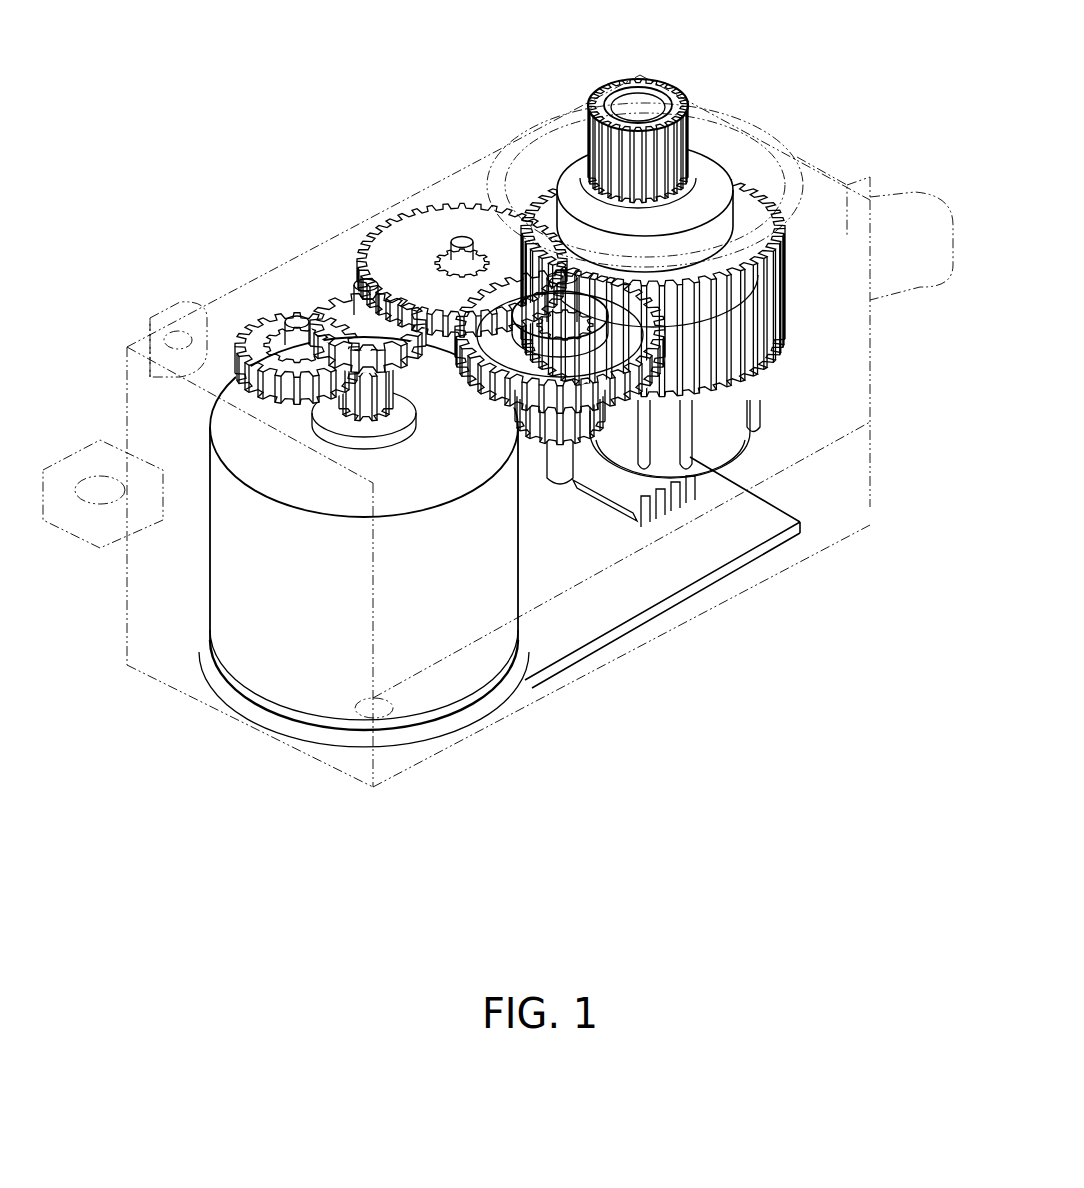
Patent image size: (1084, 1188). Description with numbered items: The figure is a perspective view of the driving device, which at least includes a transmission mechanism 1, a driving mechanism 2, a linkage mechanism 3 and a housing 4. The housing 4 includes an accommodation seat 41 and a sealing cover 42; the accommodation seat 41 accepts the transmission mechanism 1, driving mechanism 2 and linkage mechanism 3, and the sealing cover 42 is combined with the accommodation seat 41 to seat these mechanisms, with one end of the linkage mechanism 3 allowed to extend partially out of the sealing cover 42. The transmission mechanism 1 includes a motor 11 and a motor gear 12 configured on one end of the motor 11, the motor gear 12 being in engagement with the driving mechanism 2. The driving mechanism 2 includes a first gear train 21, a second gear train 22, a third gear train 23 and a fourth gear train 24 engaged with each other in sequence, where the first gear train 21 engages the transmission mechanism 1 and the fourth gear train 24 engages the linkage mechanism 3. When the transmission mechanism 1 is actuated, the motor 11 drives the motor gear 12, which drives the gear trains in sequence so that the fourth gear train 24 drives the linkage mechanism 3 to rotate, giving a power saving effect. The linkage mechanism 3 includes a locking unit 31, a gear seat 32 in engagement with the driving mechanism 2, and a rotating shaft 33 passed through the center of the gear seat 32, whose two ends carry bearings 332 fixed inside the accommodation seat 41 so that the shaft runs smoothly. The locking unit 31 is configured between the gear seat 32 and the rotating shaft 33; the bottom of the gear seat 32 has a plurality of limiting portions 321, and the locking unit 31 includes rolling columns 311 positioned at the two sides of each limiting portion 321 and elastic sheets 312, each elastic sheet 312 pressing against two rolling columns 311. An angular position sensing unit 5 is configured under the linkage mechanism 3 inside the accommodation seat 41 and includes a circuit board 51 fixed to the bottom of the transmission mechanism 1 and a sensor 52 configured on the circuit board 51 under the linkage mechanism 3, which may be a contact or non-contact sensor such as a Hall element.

The transmission mechanism 1 is at (294, 543).
The motor 11 is at (267, 683).
The motor gear 12 is at (330, 428).
The driving mechanism 2 is at (440, 283).
The first gear train 21 is at (256, 307).
The second gear train 22 is at (324, 281).
The third gear train 23 is at (423, 189).
The fourth gear train 24 is at (540, 290).
The linkage mechanism 3 is at (740, 300).
The locking unit 31 is at (775, 477).
The rolling column 311 is at (662, 455).
The elastic sheet 312 is at (628, 430).
The gear seat 32 is at (768, 305).
The limiting portion 321 is at (720, 430).
The rotating shaft 33 is at (666, 107).
The bearing 332 is at (703, 170).
The housing 4 is at (498, 431).
The accommodation seat 41 is at (860, 417).
The sealing cover 42 is at (188, 286).
The angular position sensing unit 5 is at (662, 601).
The circuit board 51 is at (530, 658).
The sensor 52 is at (632, 500).